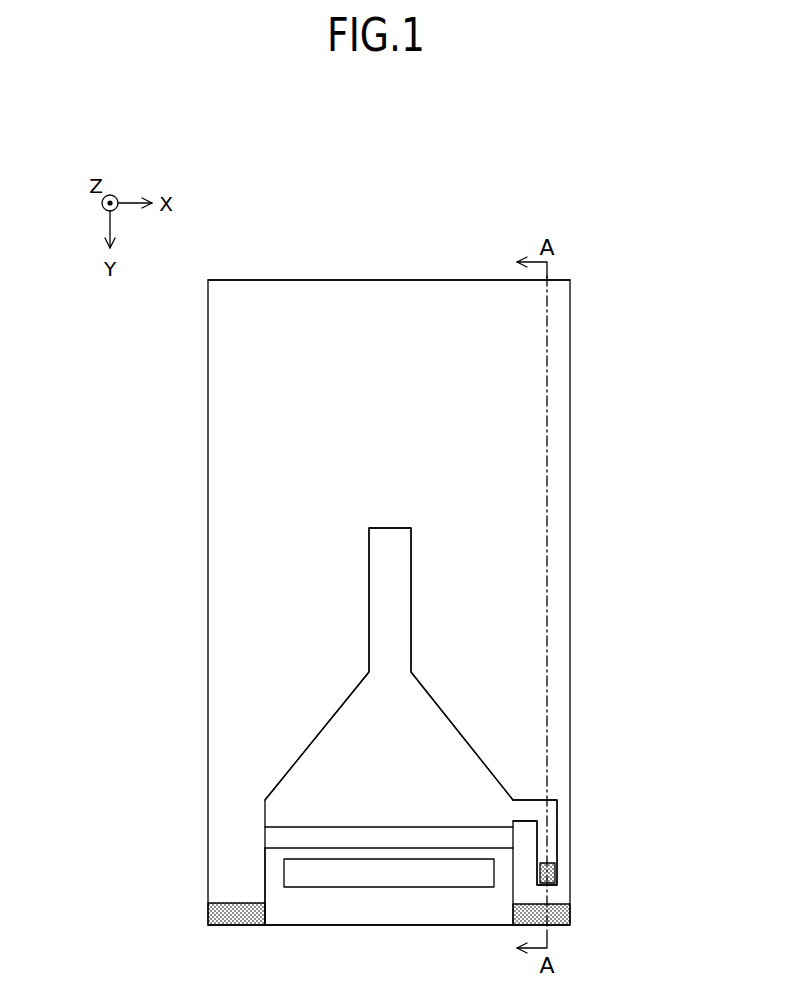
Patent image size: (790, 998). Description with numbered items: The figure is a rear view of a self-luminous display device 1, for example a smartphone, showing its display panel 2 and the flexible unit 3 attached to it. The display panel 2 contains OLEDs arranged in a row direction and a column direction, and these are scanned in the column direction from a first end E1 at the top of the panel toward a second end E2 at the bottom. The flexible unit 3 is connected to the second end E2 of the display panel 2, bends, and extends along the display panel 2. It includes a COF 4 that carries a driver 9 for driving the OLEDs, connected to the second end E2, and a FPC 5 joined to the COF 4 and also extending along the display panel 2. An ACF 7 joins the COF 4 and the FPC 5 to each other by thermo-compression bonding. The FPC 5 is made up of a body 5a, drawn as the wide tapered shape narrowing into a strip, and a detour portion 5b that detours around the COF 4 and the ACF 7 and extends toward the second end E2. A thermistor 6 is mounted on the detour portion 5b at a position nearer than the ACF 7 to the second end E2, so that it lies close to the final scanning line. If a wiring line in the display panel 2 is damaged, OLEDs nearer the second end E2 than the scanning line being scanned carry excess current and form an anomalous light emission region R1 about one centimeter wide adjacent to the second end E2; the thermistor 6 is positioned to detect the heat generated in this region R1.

The self-luminous display device 1 is at (530, 211).
The display panel 2 is at (573, 337).
The flexible unit 3 is at (256, 810).
The COF 4 is at (264, 868).
The FPC 5 is at (459, 706).
The body 5a is at (474, 742).
The detour portion 5b is at (566, 842).
The thermistor 6 is at (548, 864).
The ACF 7 is at (265, 838).
The driver 9 is at (385, 889).
The first end E1 is at (253, 279).
The second end E2 is at (256, 927).
The anomalous light emission region R1 is at (557, 915).